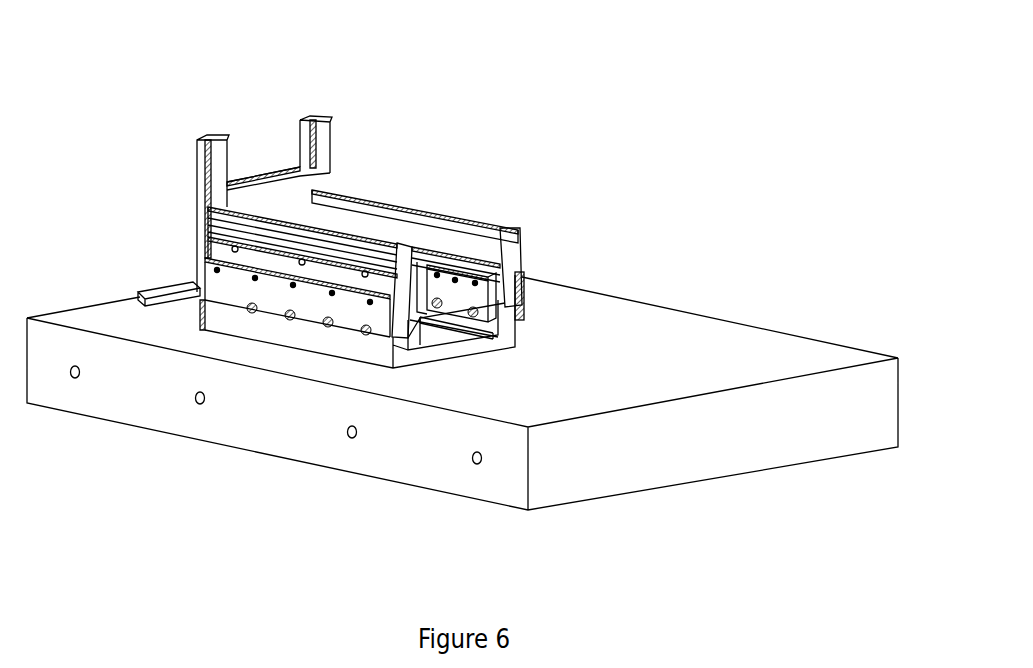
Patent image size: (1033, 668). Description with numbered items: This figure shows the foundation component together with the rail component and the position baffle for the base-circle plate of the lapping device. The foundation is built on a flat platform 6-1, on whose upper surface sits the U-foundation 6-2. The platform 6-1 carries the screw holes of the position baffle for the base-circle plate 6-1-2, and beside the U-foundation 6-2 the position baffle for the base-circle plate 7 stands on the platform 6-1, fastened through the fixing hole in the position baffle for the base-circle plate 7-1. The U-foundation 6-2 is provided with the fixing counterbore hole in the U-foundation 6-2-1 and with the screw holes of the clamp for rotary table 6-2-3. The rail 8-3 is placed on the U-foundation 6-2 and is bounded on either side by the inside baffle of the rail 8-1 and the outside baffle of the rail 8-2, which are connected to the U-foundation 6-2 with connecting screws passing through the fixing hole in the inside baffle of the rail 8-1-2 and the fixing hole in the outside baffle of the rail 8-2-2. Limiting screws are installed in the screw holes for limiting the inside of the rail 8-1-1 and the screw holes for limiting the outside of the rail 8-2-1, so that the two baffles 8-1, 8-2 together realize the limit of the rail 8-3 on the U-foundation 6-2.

The platform 6-1 is at (235, 407).
The screw holes of the position baffle for the base-circle plate 6-1-2 is at (135, 308).
The U-foundation 6-2 is at (347, 345).
The fixing counterbore hole in the U-foundation 6-2-1 is at (462, 332).
The screw holes of the clamp for rotary table 6-2-3 is at (422, 325).
The position baffle for the base-circle plate 7 is at (218, 156).
The fixing hole in the position baffle for the base-circle plate 7-1 is at (170, 291).
The inside baffle of the rail 8-1 is at (455, 280).
The screw holes for limiting the inside of the rail 8-1-1 is at (437, 275).
The fixing hole in the inside baffle of the rail 8-1-2 is at (478, 306).
The outside baffle of the rail 8-2 is at (215, 283).
The screw holes for limiting the outside of the rail 8-2-1 is at (217, 270).
The fixing hole in the outside baffle of the rail 8-2-2 is at (213, 300).
The rail 8-3 is at (332, 190).